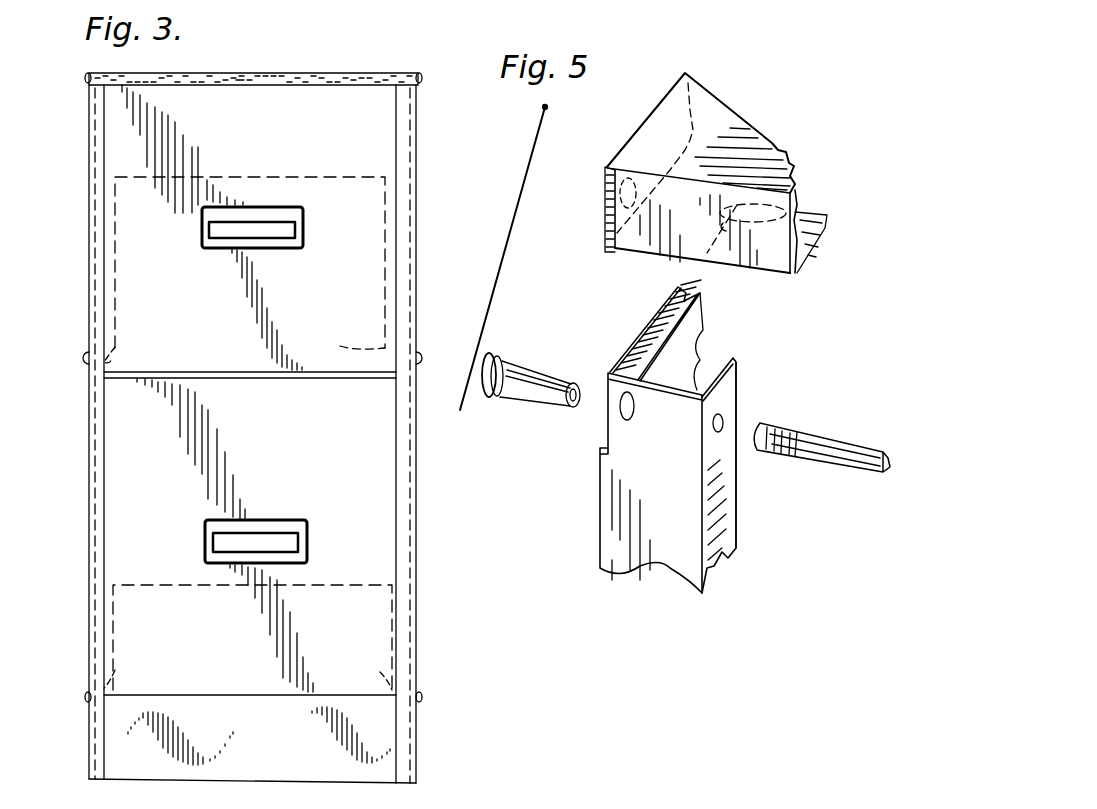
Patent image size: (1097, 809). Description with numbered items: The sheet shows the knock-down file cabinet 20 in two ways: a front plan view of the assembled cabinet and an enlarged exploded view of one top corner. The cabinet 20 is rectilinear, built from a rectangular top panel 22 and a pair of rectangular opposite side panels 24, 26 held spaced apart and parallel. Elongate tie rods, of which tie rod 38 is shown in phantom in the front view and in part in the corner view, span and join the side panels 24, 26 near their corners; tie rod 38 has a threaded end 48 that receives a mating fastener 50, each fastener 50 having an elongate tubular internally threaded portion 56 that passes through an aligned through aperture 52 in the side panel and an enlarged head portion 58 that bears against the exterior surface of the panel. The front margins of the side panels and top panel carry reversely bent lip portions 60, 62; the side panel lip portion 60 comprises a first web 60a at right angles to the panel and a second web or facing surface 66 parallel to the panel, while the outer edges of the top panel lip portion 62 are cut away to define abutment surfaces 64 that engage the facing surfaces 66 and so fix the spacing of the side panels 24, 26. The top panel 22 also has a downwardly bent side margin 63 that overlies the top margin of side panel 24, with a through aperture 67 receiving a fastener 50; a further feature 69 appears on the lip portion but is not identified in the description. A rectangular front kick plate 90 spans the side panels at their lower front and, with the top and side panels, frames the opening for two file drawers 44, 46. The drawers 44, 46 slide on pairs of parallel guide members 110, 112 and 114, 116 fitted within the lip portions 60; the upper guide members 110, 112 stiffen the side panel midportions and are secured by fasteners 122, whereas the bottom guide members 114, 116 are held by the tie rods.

In FIG. 3, the file cabinet 20 is at (77, 441).
In FIG. 3, the top panel 22 is at (358, 35).
In FIG. 5, the top panel 22 is at (715, 131).
In FIG. 3, the side panel 24 is at (88, 279).
In FIG. 3, the side panel 26 is at (418, 223).
In FIG. 3, the tie rod 38 is at (240, 86).
In FIG. 5, the tie rod 38 is at (822, 447).
In FIG. 3, the file drawer 44 is at (368, 457).
In FIG. 3, the file drawer 46 is at (336, 305).
In FIG. 5, the threaded end 48 is at (773, 426).
In FIG. 3, the mating fastener 50 is at (86, 78).
In FIG. 5, the mating fastener 50 is at (539, 385).
In FIG. 5, the through aperture 52 is at (620, 410).
In FIG. 5, the tubular internally threaded portion 56 is at (576, 380).
In FIG. 5, the enlarged head portion 58 is at (490, 355).
In FIG. 5, the reversely bent lip portion 60 is at (674, 454).
In FIG. 5, the first web 60a is at (677, 471).
In FIG. 5, the lip portion 62 is at (772, 258).
In FIG. 5, the downwardly bent side margin 63 is at (605, 183).
In FIG. 5, the abutment surface 64 is at (797, 210).
In FIG. 5, the facing surface 66 is at (730, 518).
In FIG. 5, the through aperture 67 is at (616, 222).
In FIG. 5, the hole in side face 69 is at (723, 420).
In FIG. 3, the front kick plate 90 is at (320, 760).
In FIG. 3, the guide member 110 is at (340, 341).
In FIG. 3, the guide member 112 is at (118, 345).
In FIG. 3, the guide member 114 is at (380, 672).
In FIG. 3, the guide member 116 is at (115, 670).
In FIG. 3, the fastener 122 is at (86, 358).